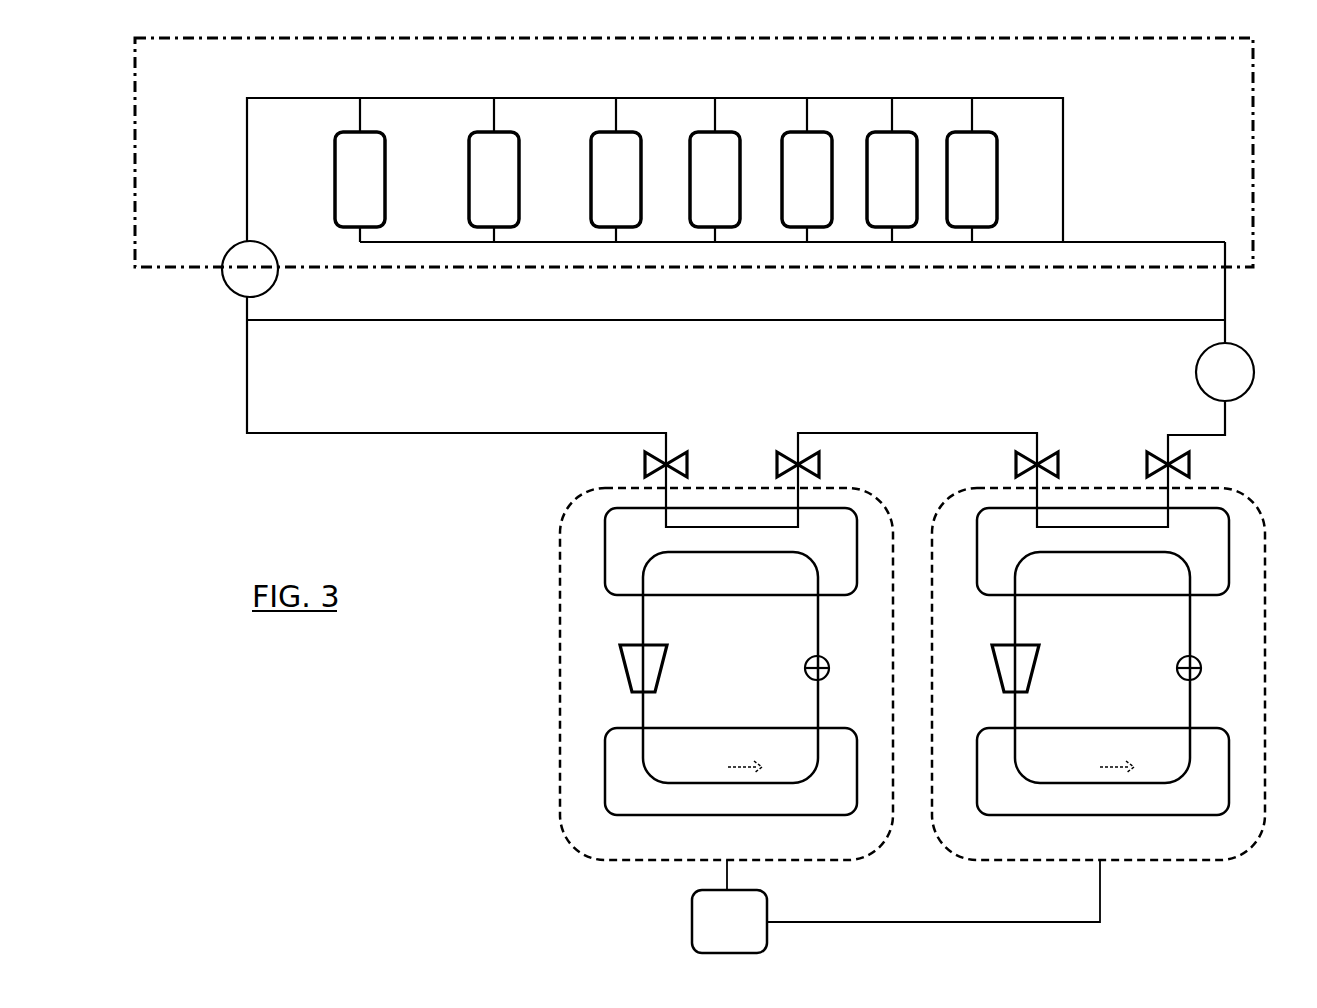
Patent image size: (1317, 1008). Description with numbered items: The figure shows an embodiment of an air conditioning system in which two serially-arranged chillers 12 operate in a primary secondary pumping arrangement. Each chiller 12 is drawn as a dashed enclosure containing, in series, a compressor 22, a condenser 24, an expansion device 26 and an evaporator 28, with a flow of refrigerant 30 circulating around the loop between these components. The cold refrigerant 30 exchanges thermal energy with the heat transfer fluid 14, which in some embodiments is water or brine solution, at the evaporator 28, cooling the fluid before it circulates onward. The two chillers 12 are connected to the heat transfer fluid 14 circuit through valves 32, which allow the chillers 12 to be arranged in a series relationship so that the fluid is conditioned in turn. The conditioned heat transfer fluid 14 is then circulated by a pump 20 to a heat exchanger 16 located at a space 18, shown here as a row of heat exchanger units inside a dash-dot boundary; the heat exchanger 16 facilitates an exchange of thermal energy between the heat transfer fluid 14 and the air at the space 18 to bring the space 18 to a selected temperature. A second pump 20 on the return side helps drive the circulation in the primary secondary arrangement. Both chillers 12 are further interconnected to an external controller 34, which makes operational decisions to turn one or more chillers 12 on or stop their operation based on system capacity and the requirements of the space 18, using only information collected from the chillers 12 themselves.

The chiller 12 is at (537, 663).
The heat transfer fluid 14 is at (1228, 437).
The heat exchanger 16 is at (336, 180).
The space 18 is at (1250, 140).
The pump 20 is at (221, 261).
The compressor 22 is at (643, 682).
The condenser 24 is at (765, 737).
The expansion device 26 is at (803, 667).
The evaporator 28 is at (730, 575).
The refrigerant 30 is at (916, 667).
The valve 32 is at (1008, 465).
The controller 34 is at (685, 908).